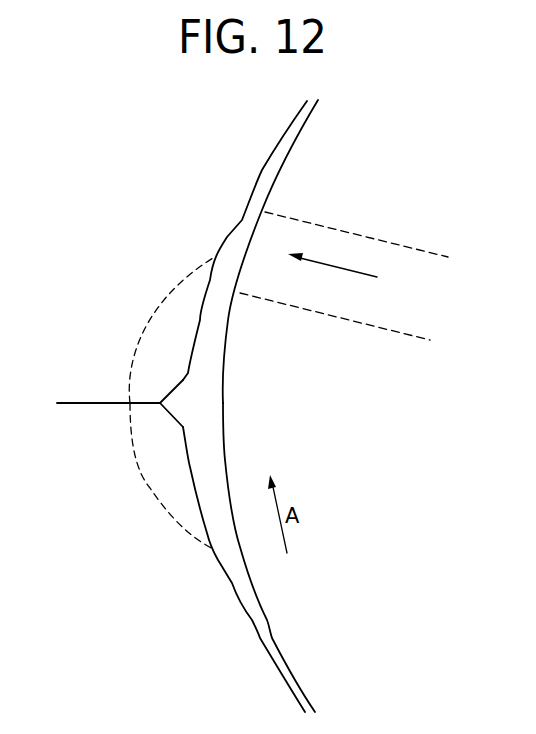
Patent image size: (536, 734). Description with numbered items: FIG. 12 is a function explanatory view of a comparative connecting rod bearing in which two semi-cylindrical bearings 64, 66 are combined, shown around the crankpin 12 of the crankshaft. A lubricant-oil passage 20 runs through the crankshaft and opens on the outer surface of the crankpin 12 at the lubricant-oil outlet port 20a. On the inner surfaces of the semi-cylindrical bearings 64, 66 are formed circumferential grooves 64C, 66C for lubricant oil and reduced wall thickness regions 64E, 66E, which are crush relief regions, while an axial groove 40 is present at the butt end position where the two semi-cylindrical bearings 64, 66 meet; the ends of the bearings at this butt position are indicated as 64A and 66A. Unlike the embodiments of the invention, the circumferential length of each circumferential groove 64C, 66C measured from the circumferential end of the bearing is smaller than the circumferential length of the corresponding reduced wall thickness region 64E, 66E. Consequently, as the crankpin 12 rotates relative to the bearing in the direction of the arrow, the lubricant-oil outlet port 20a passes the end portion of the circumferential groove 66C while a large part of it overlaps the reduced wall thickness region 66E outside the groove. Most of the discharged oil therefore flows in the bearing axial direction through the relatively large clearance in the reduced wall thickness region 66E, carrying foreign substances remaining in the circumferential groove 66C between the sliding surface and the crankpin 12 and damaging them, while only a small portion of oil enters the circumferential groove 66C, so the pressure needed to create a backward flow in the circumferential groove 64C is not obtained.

The crankpin 12 is at (418, 434).
The lubricant-oil passage 20 is at (410, 245).
The lubricant-oil outlet port 20a is at (248, 220).
The axial groove 40 is at (175, 402).
The semi-cylindrical bearing 64 is at (240, 657).
The end face of lower cover member 64A is at (72, 390).
The circumferential groove 64C is at (150, 488).
The reduced wall thickness region 64E is at (195, 488).
The semi-cylindrical bearing 66 is at (268, 138).
The end face of upper cover member 66A is at (85, 417).
The circumferential groove 66C is at (173, 293).
The reduced wall thickness region 66E is at (200, 320).